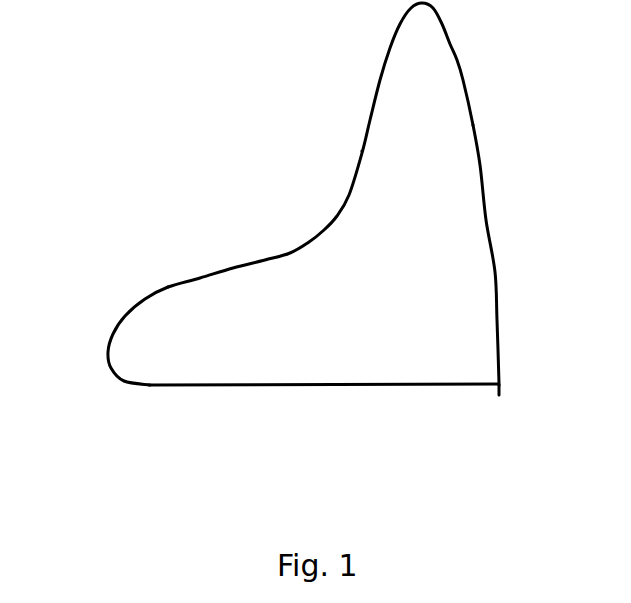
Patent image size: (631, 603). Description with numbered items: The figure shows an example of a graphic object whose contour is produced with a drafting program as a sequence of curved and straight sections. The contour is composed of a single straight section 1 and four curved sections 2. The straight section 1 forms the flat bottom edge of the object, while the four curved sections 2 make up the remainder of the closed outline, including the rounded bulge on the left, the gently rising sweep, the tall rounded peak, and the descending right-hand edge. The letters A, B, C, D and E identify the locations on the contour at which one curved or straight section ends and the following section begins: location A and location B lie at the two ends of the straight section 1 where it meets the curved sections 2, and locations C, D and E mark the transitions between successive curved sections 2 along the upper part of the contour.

The straight section 1 is at (312, 385).
The curved section 2 is at (457, 58).
The location A is at (496, 410).
The location B is at (149, 387).
The location C is at (168, 287).
The location D is at (362, 151).
The location E is at (473, 125).